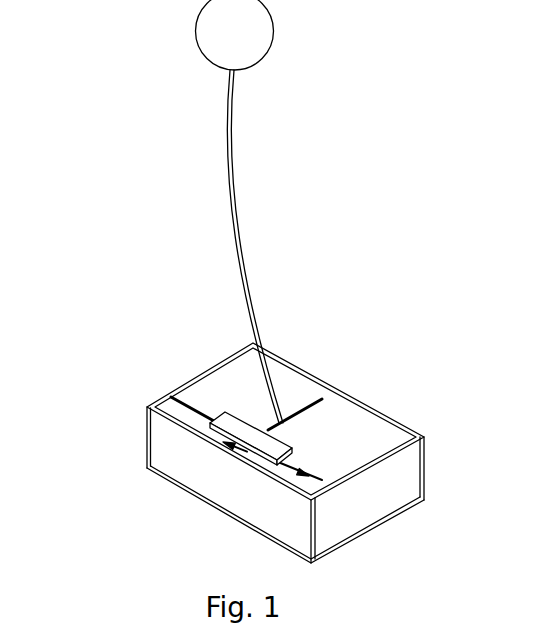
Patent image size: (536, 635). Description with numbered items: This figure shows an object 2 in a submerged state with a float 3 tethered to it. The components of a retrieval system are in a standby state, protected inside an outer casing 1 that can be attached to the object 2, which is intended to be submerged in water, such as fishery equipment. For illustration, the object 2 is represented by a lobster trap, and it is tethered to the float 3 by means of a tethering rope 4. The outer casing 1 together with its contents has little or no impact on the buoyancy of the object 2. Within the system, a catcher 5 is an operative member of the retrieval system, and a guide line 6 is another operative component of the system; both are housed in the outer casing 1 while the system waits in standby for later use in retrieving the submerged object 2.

The outer casing 1 is at (227, 445).
The object 2 is at (291, 348).
The float 3 is at (277, 59).
The tethering rope 4 is at (227, 208).
The catcher 5 is at (293, 472).
The guide line 6 is at (327, 390).